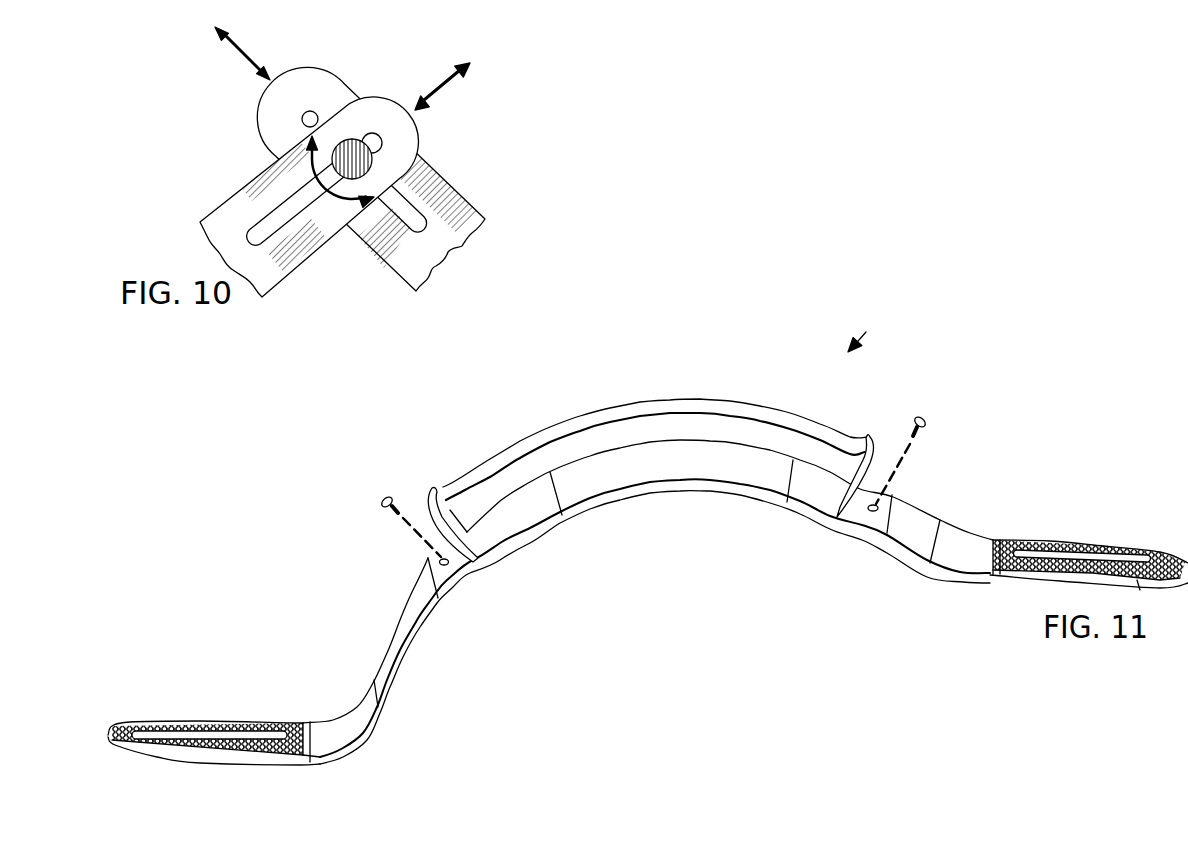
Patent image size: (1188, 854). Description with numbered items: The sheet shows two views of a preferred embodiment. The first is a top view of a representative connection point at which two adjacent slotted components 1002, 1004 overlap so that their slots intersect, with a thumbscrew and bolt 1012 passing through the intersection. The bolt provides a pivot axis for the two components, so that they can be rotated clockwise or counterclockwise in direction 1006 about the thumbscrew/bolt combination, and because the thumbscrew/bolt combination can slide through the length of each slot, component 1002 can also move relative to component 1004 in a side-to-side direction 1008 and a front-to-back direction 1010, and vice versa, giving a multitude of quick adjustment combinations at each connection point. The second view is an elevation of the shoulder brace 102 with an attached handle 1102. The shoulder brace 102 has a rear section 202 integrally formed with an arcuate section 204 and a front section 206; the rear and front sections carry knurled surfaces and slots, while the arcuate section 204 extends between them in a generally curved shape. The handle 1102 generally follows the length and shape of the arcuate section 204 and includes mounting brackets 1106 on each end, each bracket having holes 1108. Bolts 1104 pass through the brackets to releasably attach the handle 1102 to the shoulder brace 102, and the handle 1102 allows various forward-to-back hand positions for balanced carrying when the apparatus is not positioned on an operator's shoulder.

In FIG. 10, the component 1002 is at (212, 222).
In FIG. 10, the component 1004 is at (336, 78).
In FIG. 10, the direction 1006 is at (357, 199).
In FIG. 10, the side-to-side direction 1008 is at (440, 84).
In FIG. 10, the front-to-back direction 1010 is at (243, 58).
In FIG. 10, the thumbscrew and bolt 1012 is at (375, 138).
In FIG. 11, the shoulder brace 102 is at (868, 327).
In FIG. 11, the handle 1102 is at (735, 402).
In FIG. 11, the bolts 1104 is at (381, 507).
In FIG. 11, the mounting brackets 1106 is at (430, 560).
In FIG. 11, the holes 1108 is at (470, 572).
In FIG. 11, the arcuate section 204 is at (620, 500).
In FIG. 11, the rear section 202 is at (193, 717).
In FIG. 11, the front section 206 is at (1102, 540).